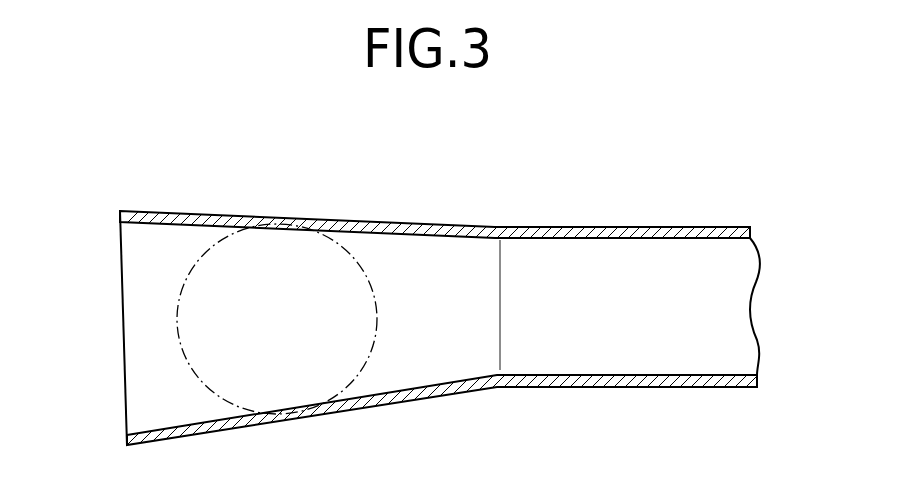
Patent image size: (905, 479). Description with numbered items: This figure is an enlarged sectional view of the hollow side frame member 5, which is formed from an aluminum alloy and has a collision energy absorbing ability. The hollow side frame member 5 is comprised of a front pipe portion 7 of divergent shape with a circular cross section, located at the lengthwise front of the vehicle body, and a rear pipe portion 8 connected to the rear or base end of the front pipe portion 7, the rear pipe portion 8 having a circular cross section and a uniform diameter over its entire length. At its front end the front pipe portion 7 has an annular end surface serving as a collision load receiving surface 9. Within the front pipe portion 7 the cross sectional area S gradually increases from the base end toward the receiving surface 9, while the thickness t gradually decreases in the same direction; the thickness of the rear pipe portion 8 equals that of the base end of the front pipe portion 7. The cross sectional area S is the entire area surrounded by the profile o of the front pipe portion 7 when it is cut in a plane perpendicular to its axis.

The hollow side frame member 5 is at (603, 223).
The front pipe portion 7 is at (390, 220).
The rear pipe portion 8 is at (717, 227).
The collision load receiving surface 9 is at (117, 213).
The thickness t is at (463, 242).
The profile o is at (378, 335).
The cross sectional area S is at (216, 381).